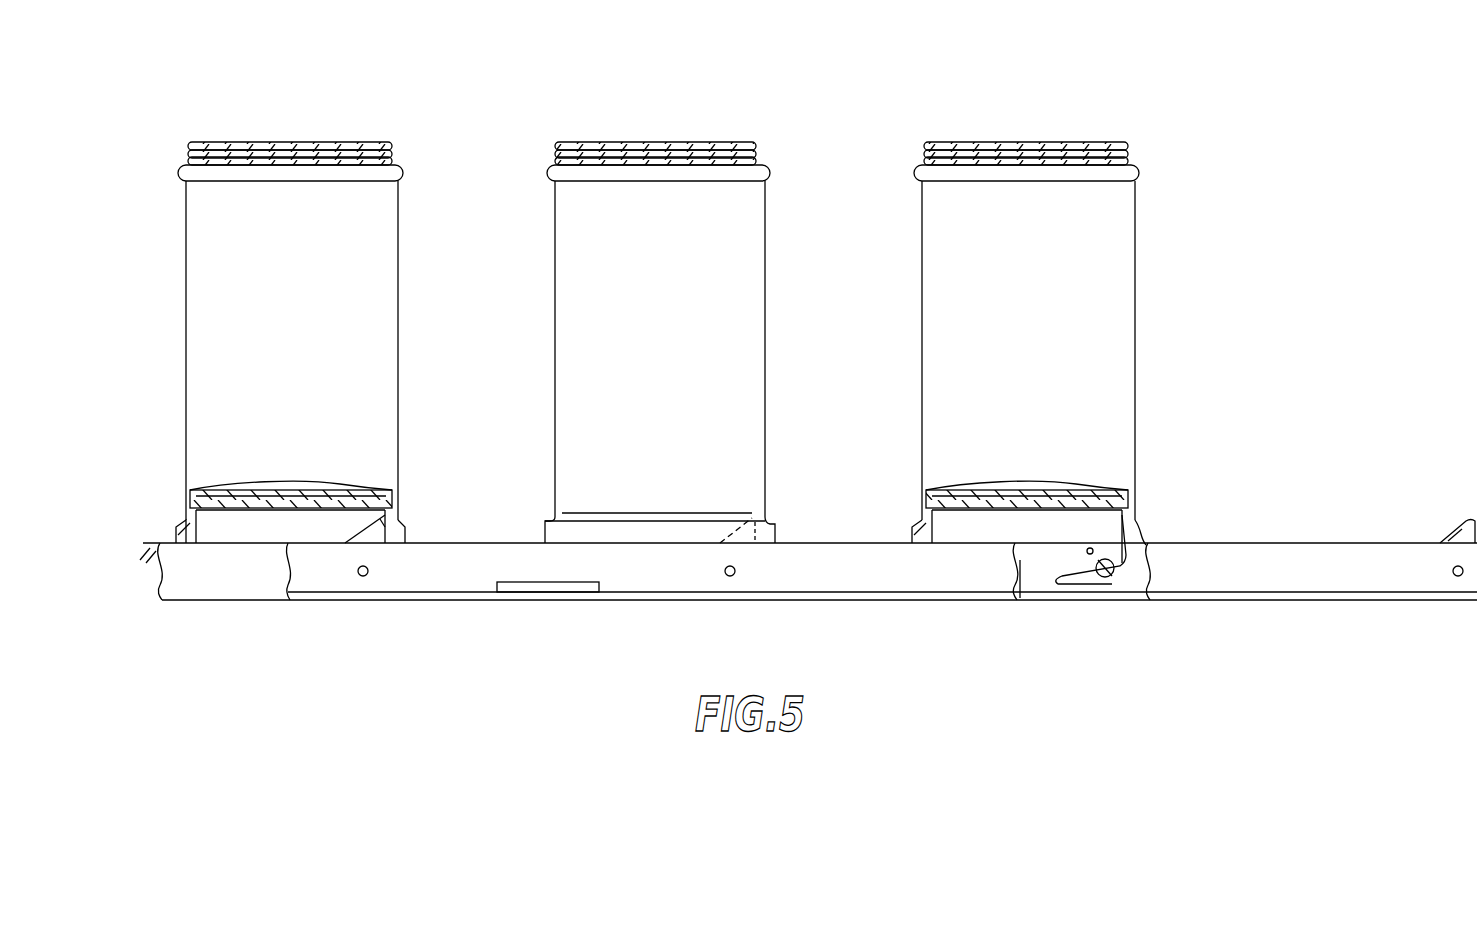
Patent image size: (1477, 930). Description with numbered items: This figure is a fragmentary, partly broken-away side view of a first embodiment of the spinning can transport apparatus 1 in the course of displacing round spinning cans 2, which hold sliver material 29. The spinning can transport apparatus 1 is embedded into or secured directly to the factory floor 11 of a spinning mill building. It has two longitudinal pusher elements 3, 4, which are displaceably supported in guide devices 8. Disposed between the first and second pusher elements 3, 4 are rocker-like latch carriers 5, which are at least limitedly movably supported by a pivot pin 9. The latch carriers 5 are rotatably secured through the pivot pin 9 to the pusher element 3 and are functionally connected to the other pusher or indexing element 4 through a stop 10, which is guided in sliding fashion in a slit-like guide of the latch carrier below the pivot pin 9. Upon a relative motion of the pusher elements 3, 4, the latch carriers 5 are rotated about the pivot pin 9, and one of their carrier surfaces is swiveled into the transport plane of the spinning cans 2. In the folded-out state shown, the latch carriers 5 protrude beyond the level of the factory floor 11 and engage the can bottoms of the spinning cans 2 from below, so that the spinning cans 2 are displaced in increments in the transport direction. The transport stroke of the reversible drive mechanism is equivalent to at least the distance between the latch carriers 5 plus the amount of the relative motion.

The spinning can transport apparatus 1 is at (1242, 180).
The spinning cans 2 is at (300, 326).
The pusher element 3 is at (1022, 598).
The pusher element 4 is at (1332, 548).
The latch carriers 5 is at (398, 518).
The guide devices 8 is at (528, 585).
The pivot pin 9 is at (1093, 548).
The stop 10 is at (1118, 566).
The factory floor 11 is at (152, 543).
The sliver material 29 is at (358, 142).